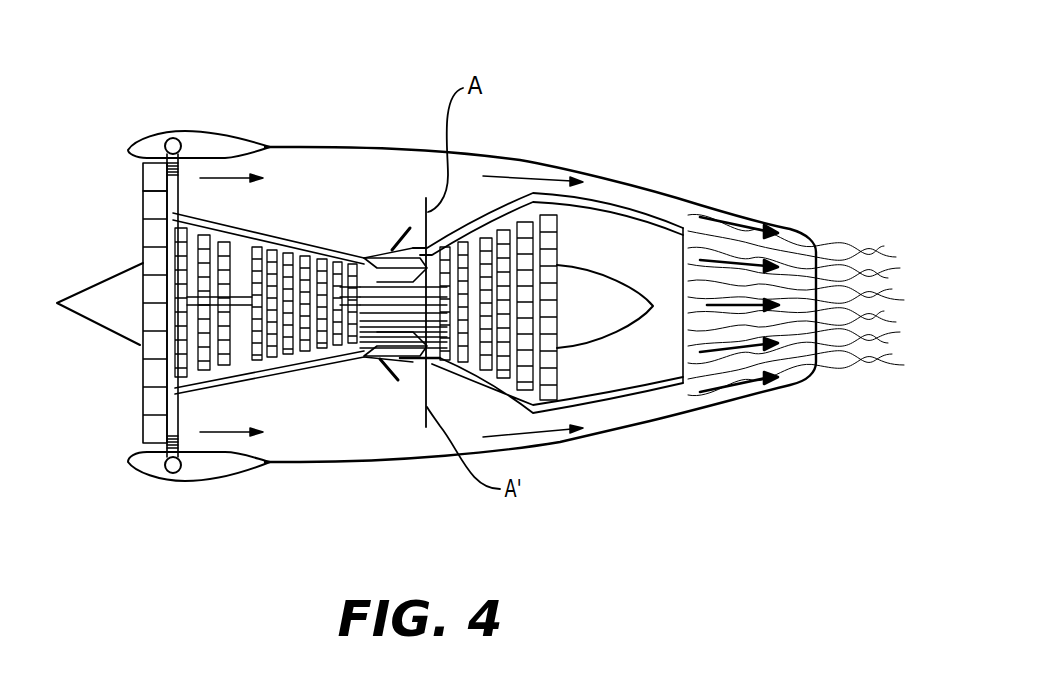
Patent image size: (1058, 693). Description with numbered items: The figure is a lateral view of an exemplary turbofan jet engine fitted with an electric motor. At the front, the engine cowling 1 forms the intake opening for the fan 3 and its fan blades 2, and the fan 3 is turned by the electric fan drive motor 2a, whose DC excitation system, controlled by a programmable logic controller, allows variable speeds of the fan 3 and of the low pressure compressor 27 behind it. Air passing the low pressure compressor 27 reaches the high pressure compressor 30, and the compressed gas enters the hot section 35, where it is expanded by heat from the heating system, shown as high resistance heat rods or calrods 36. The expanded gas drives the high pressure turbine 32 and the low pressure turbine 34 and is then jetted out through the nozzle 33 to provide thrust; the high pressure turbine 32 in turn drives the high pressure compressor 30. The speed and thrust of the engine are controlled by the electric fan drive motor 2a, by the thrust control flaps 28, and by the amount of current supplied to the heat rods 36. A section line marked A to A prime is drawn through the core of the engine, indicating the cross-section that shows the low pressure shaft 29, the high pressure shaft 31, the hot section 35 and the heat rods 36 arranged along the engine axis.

The engine cowling 1 is at (150, 134).
The fan blades 2 is at (150, 189).
The electric fan drive motor 2a is at (181, 187).
The fan 3 is at (90, 283).
The low pressure compressor 27 is at (205, 372).
The thrust control flaps 28 is at (402, 232).
The low pressure shaft 29 is at (380, 334).
The high pressure compressor 30 is at (289, 250).
The high pressure shaft 31 is at (383, 258).
The high pressure turbine 32 is at (448, 212).
The nozzle 33 is at (633, 370).
The low pressure turbine 34 is at (500, 385).
The hot section 35 is at (412, 358).
The heat rods 36 is at (373, 318).